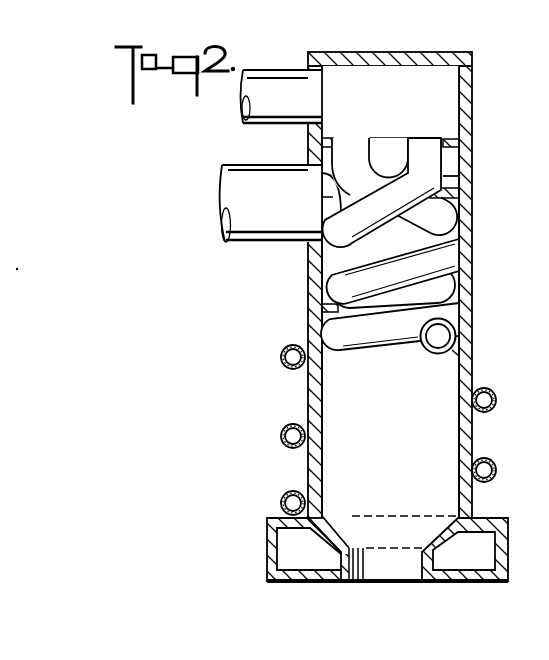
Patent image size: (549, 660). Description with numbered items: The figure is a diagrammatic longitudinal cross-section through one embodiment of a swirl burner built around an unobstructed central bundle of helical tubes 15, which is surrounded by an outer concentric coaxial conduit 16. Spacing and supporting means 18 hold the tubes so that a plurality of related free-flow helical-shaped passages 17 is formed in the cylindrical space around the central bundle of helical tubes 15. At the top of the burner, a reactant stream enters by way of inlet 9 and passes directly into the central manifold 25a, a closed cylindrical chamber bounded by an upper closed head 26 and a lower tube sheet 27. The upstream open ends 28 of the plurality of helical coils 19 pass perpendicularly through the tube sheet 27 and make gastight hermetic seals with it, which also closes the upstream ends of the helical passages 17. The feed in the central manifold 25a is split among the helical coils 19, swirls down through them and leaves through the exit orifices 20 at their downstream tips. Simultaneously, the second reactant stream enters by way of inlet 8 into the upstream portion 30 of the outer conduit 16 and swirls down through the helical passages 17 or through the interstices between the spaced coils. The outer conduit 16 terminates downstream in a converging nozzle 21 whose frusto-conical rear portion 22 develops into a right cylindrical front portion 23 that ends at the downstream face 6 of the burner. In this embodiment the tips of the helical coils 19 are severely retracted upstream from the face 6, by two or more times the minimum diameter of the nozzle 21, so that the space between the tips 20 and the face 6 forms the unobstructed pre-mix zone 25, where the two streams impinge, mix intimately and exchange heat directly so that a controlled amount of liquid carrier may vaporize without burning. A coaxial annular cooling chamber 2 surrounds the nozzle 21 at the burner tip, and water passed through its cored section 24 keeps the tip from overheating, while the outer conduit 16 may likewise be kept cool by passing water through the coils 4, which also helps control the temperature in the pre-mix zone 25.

The cooling chamber 2 is at (401, 551).
The coils 4 is at (285, 428).
The downstream face 6 is at (433, 581).
The inlet 8 is at (247, 240).
The inlet 9 is at (262, 75).
The central bundle of helical tubes 15 is at (343, 156).
The outer conduit 16 is at (471, 322).
The helical-shaped passages 17 is at (453, 202).
The spacing and supporting means 18 is at (452, 180).
The helical coils 19 is at (318, 270).
The exit orifices 20 is at (331, 353).
The converging nozzle 21 is at (385, 532).
The frusto-conical rear portion 22 is at (337, 532).
The right cylindrical front portion 23 is at (378, 570).
The cored section 24 is at (475, 563).
The pre-mix zone 25 is at (375, 437).
The central manifold 25a is at (452, 90).
The upper closed head 26 is at (395, 52).
The lower tube sheet 27 is at (453, 160).
The upstream open ends 28 is at (424, 136).
The upstream portion 30 is at (328, 193).